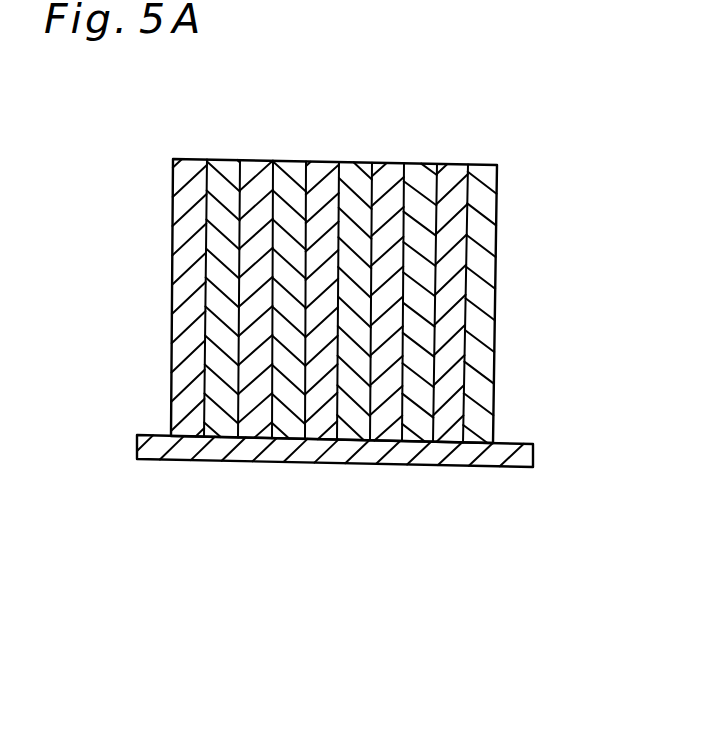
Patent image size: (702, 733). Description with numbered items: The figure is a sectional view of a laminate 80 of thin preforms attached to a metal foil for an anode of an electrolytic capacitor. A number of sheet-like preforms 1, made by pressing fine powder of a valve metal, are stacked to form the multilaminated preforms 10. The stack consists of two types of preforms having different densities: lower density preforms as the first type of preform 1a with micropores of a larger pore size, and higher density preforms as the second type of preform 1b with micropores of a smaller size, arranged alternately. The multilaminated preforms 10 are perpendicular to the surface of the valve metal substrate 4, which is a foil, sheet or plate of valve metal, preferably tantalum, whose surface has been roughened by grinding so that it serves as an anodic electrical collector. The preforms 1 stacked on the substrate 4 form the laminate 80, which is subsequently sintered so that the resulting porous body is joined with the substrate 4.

The preform 1 is at (508, 138).
The first type of preform 1a is at (422, 208).
The second type of preform 1b is at (383, 382).
The multilaminated preforms 10 is at (448, 293).
The valve metal substrate 4 is at (502, 458).
The laminate 80 is at (376, 578).